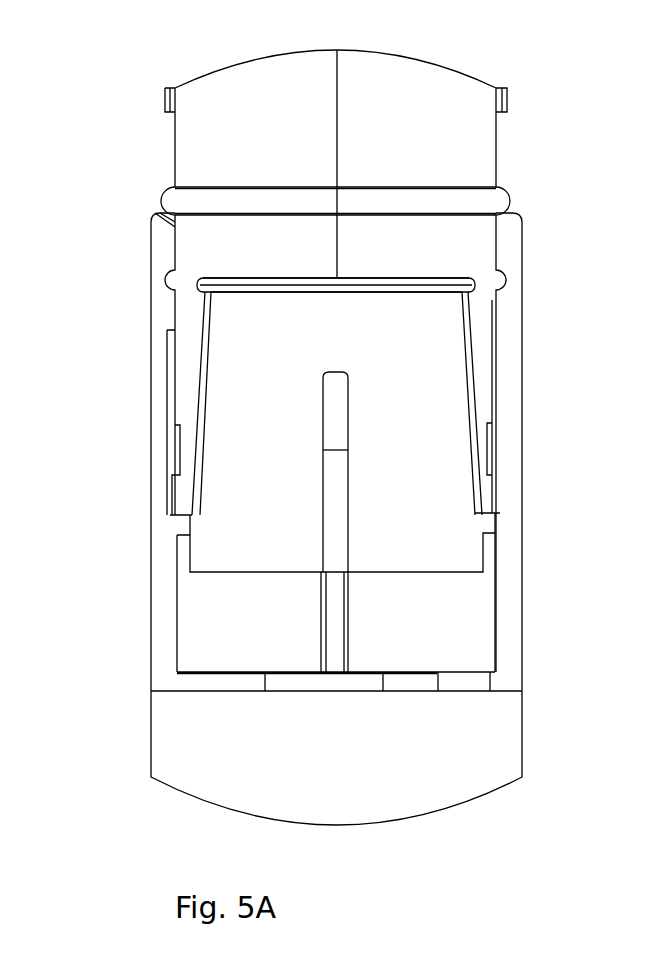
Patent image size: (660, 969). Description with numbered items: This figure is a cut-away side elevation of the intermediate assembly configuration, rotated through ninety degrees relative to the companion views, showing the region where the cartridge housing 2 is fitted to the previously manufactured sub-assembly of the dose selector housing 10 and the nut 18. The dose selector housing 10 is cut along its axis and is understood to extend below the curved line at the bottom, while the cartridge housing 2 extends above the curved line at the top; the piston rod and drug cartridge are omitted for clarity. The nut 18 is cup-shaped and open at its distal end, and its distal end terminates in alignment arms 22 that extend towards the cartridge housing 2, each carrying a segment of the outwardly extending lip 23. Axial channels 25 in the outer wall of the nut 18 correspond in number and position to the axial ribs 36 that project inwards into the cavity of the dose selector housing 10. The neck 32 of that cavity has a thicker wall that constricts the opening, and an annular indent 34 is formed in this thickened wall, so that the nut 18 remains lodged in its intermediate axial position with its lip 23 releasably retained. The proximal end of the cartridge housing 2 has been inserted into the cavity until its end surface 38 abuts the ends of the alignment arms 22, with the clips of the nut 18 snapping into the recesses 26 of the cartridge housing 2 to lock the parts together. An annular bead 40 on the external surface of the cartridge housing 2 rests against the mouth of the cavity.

The cartridge housing 2 is at (485, 152).
The annular bead 40 is at (468, 194).
The end surface 38 is at (400, 278).
The lip 23 is at (447, 281).
The annular indent 34 is at (520, 270).
The neck 32 is at (510, 308).
The alignment arm 22 is at (435, 392).
The channel 25 is at (342, 488).
The recess 26 is at (497, 457).
The axial rib 36 is at (338, 593).
The nut 18 is at (462, 548).
The dose selector housing 10 is at (463, 718).